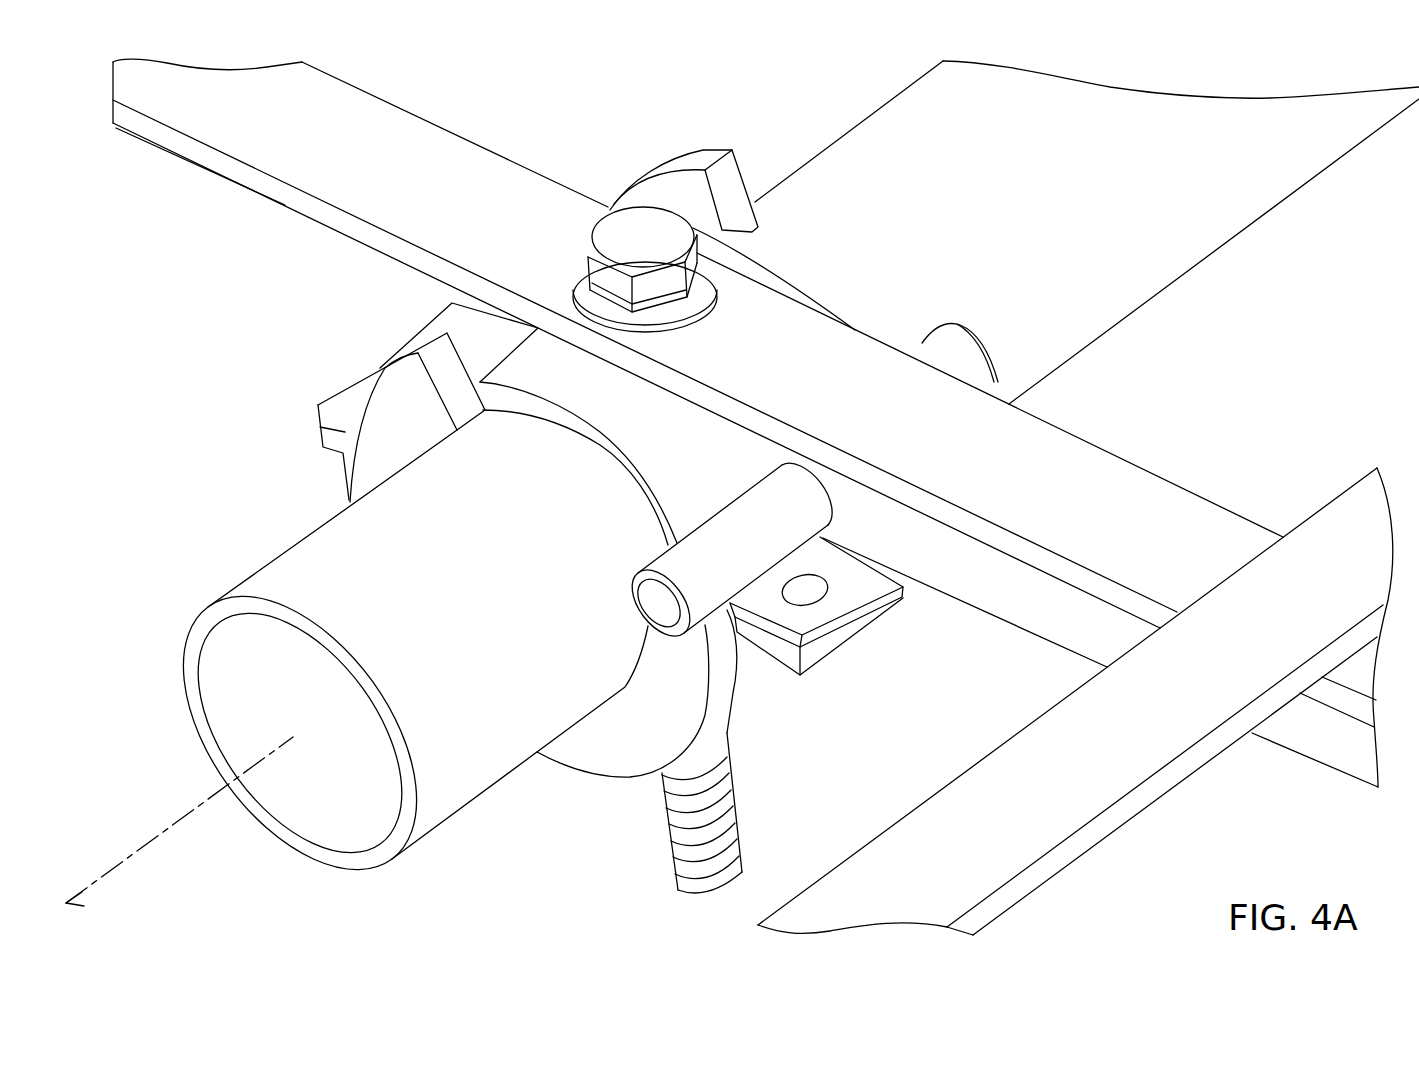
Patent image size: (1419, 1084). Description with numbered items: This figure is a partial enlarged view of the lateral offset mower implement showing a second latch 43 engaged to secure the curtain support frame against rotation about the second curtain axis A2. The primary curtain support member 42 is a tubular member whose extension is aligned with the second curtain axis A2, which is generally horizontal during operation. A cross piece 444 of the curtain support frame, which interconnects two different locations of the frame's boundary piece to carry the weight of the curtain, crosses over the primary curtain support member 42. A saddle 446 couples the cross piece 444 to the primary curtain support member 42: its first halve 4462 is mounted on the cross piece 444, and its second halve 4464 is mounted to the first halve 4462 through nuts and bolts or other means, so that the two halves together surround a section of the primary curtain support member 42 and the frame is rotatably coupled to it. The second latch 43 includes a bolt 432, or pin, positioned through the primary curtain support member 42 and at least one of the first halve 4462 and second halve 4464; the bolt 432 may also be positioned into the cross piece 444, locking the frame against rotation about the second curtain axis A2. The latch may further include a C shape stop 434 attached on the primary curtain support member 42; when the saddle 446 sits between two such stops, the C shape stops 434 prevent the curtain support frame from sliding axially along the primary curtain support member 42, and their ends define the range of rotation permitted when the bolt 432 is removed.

The primary curtain support member 42 is at (1005, 211).
The second latch 43 is at (621, 160).
The bolt 432 is at (653, 285).
The C shape stop 434 is at (695, 155).
The cross piece 444 is at (405, 176).
The saddle 446 is at (811, 614).
The first halve 4462 is at (848, 578).
The second halve 4464 is at (763, 650).
The second curtain axis A2 is at (90, 902).